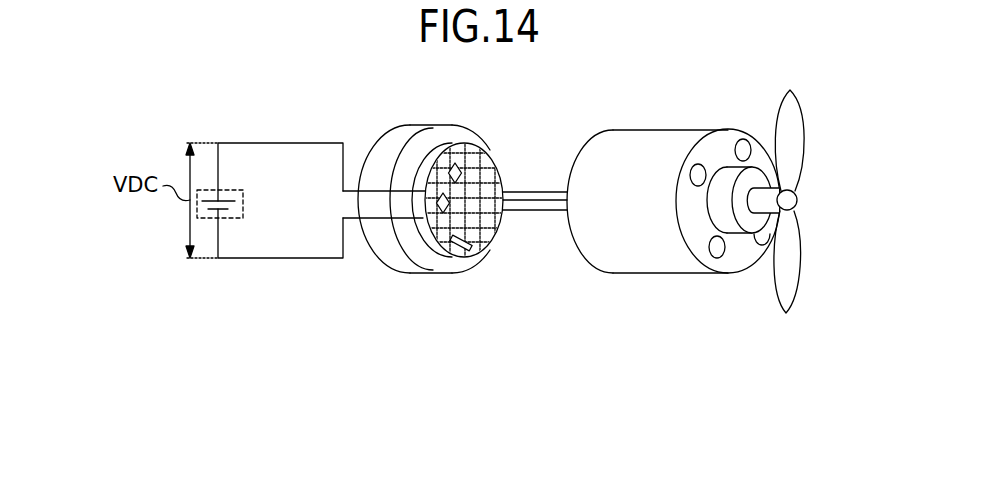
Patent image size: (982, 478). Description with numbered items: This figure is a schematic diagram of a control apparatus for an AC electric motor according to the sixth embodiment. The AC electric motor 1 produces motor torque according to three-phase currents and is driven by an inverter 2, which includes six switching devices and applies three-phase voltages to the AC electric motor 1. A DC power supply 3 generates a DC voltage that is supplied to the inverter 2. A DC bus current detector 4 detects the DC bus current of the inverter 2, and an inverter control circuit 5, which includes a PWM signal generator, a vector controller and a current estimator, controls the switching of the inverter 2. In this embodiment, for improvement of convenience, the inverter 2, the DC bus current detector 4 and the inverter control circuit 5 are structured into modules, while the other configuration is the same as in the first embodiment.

The AC electric motor 1 is at (674, 130).
The inverter 2 is at (460, 170).
The DC power supply 3 is at (246, 199).
The DC bus current detector 4 is at (460, 272).
The inverter control circuit 5 is at (450, 207).